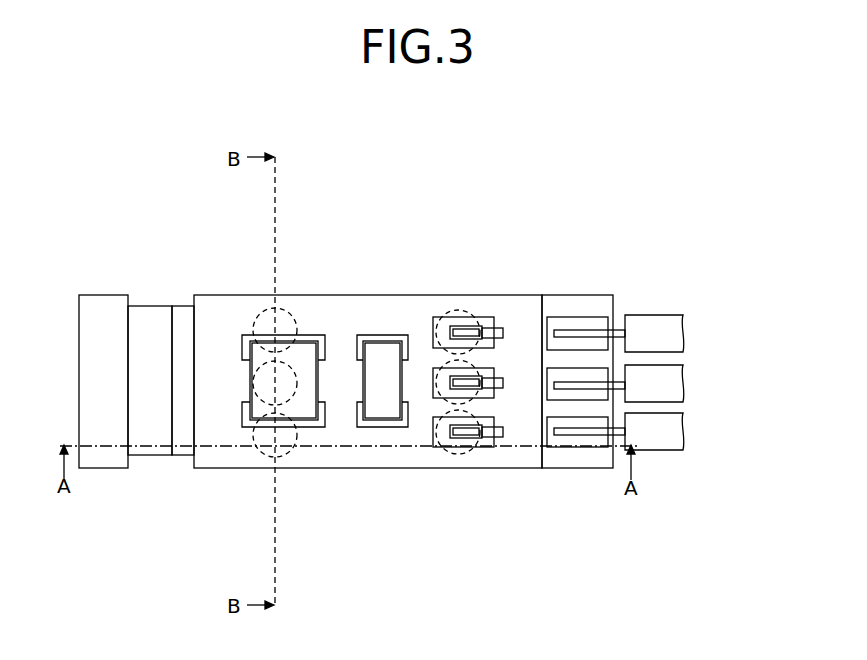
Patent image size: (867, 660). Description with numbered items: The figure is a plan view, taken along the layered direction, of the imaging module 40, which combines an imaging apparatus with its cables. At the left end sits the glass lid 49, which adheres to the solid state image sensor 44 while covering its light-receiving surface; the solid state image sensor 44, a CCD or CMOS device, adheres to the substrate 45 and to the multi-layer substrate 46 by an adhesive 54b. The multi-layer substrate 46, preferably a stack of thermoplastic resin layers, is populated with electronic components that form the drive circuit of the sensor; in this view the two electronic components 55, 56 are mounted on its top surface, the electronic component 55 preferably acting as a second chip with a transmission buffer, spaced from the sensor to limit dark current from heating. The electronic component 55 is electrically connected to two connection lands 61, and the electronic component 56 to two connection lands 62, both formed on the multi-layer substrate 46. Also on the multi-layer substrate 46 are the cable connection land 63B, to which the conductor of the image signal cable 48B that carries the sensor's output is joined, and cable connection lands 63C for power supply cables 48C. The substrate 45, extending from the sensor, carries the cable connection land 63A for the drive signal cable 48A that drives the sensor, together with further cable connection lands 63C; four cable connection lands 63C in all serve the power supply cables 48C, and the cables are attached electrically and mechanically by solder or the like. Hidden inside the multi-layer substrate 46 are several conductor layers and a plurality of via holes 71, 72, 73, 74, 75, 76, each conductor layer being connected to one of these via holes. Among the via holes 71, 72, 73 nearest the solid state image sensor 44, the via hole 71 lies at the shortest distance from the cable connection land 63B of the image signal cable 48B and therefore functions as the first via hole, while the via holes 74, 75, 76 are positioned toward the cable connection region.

The imaging module 40 is at (570, 204).
The solid state image sensor 44 is at (148, 306).
The substrate 45 is at (567, 307).
The multi-layer substrate 46 is at (222, 295).
The drive signal cable 48A is at (652, 315).
The image signal cable 48B is at (503, 447).
The power supply cable 48C is at (503, 378).
The glass lid 49 is at (102, 295).
The adhesive 54b is at (182, 307).
The electronic component 55 is at (306, 355).
The electronic component 56 is at (382, 360).
The connection land 61 is at (242, 352).
The connection land 62 is at (357, 352).
The cable connection land 63A is at (593, 317).
The cable connection land 63B is at (438, 447).
The cable connection land 63C is at (433, 372).
The via hole 71 is at (285, 453).
The via hole 72 is at (298, 383).
The via hole 73 is at (258, 312).
The via hole 74 is at (424, 447).
The via hole 75 is at (473, 398).
The via hole 76 is at (458, 310).